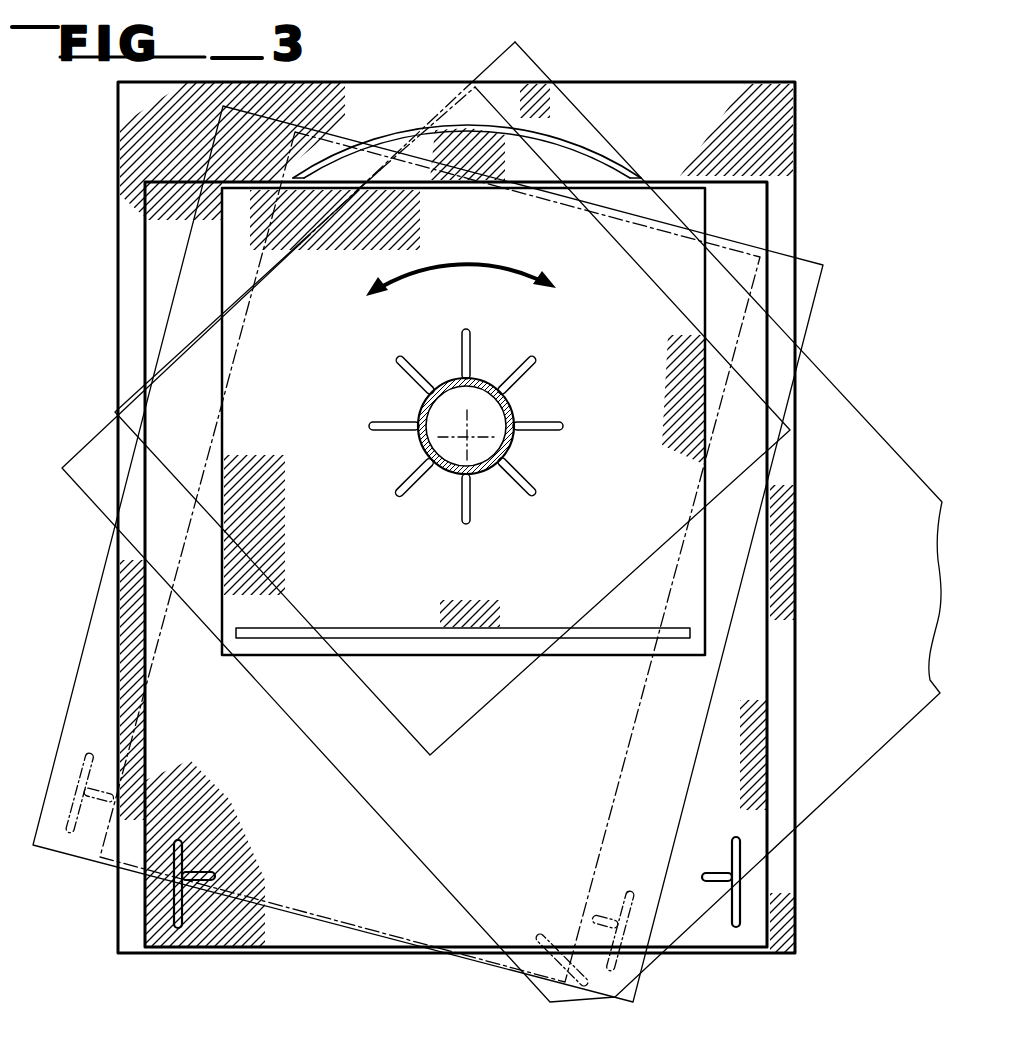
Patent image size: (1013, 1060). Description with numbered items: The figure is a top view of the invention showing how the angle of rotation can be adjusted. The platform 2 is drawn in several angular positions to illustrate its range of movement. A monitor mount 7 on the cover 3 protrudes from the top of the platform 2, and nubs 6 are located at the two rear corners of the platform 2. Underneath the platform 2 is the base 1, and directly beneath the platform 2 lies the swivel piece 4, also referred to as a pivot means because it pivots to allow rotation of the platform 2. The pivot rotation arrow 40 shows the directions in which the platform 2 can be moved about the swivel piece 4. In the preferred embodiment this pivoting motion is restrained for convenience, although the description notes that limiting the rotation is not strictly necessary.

The base 1 is at (703, 108).
The platform 2 is at (180, 705).
The cover 3 is at (265, 370).
The swivel piece 4 is at (396, 147).
The nubs 6 is at (178, 897).
The monitor mount 7 is at (422, 442).
The pivot rotation arrow 40 is at (450, 262).